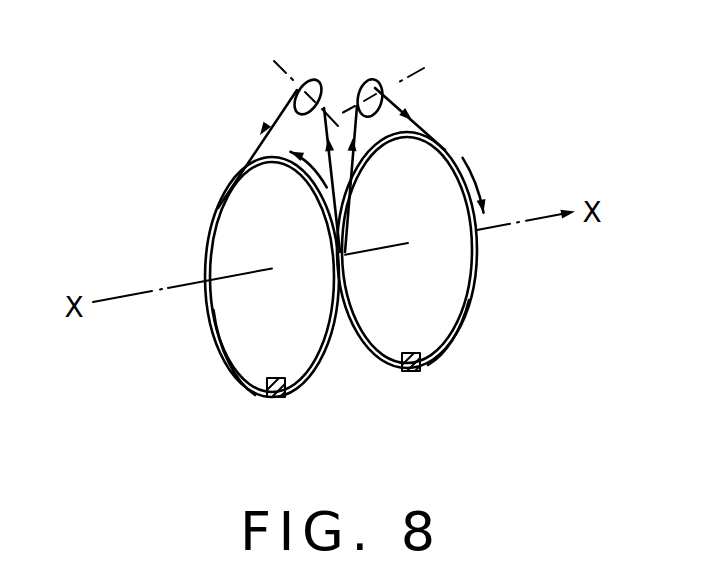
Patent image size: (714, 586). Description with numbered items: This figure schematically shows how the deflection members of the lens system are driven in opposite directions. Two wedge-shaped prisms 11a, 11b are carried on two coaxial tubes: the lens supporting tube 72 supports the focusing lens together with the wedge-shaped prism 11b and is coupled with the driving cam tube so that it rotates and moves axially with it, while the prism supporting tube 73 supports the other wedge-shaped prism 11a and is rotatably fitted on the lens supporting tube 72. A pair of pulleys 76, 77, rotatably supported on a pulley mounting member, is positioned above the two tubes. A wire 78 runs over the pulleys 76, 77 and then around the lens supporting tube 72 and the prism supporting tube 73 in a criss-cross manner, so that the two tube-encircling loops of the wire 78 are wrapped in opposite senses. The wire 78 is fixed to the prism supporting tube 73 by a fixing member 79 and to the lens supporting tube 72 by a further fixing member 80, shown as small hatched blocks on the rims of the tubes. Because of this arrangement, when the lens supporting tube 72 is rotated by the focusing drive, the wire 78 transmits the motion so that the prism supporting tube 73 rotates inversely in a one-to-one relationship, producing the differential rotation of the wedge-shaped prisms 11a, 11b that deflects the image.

The wedge-shaped prism 11a is at (224, 214).
The wedge-shaped prism 11b is at (458, 277).
The lens supporting tube 72 is at (452, 336).
The prism supporting tube 73 is at (228, 352).
The pulley 76 is at (303, 82).
The pulley 77 is at (365, 82).
The wire 78 is at (423, 121).
The fixing member 79 is at (273, 400).
The tape end fixed to second reel 80 is at (415, 372).